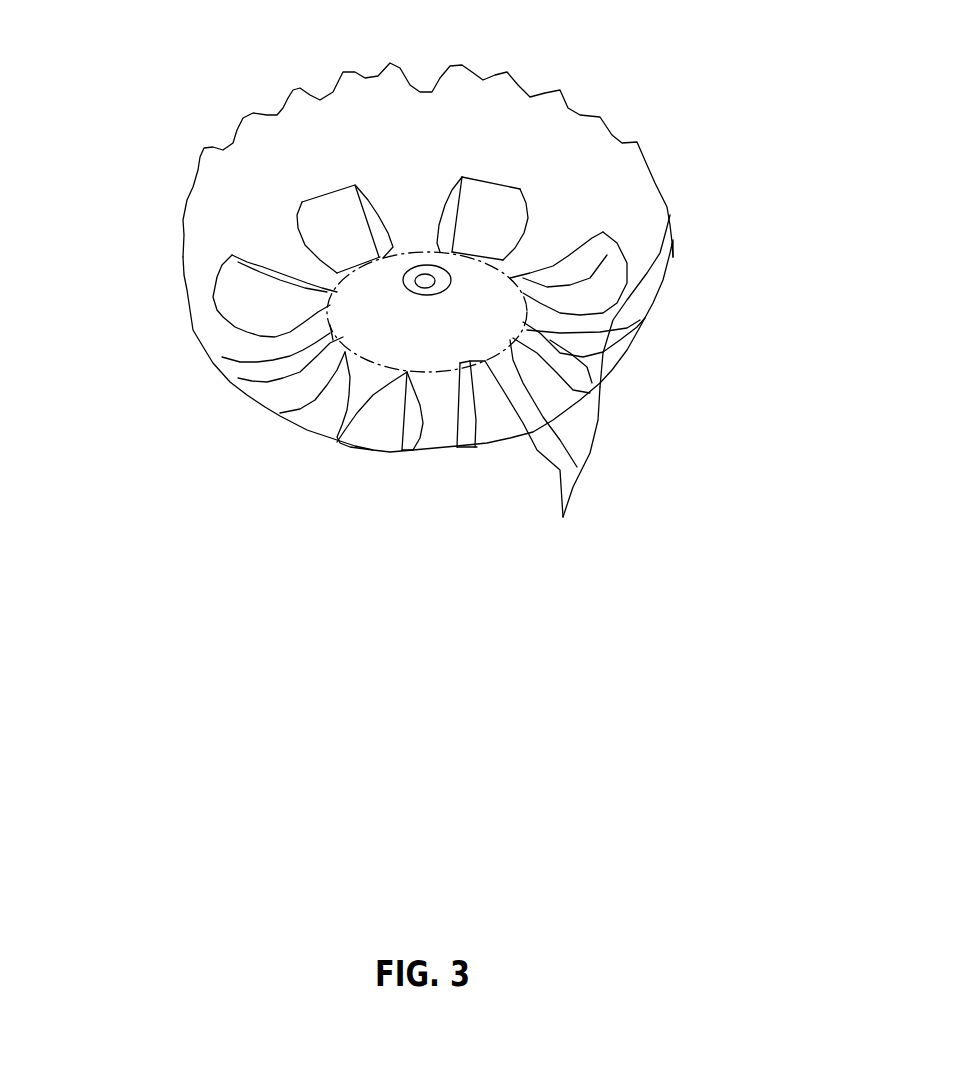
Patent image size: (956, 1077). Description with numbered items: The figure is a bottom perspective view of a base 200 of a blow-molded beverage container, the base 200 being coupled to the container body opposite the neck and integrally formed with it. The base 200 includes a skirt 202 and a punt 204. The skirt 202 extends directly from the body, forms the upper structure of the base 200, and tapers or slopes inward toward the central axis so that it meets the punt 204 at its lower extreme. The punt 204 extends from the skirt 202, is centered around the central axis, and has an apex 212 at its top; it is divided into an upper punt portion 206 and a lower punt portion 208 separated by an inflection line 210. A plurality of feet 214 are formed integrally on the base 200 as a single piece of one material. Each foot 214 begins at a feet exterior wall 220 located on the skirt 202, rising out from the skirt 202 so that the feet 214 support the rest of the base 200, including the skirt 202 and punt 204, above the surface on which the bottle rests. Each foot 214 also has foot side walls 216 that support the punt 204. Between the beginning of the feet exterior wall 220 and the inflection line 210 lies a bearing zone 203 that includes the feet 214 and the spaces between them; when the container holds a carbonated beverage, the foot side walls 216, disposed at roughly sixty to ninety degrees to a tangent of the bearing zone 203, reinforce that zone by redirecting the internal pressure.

The base 200 is at (513, 257).
The skirt 202 is at (715, 301).
The bearing zone 203 is at (542, 442).
The punt 204 is at (232, 350).
The upper punt portion 206 is at (566, 393).
The lower punt portion 208 is at (458, 460).
The inflection line 210 is at (398, 263).
The apex 212 is at (240, 254).
The feet 214 is at (525, 401).
The foot side walls 216 is at (395, 482).
The feet exterior wall 220 is at (406, 224).